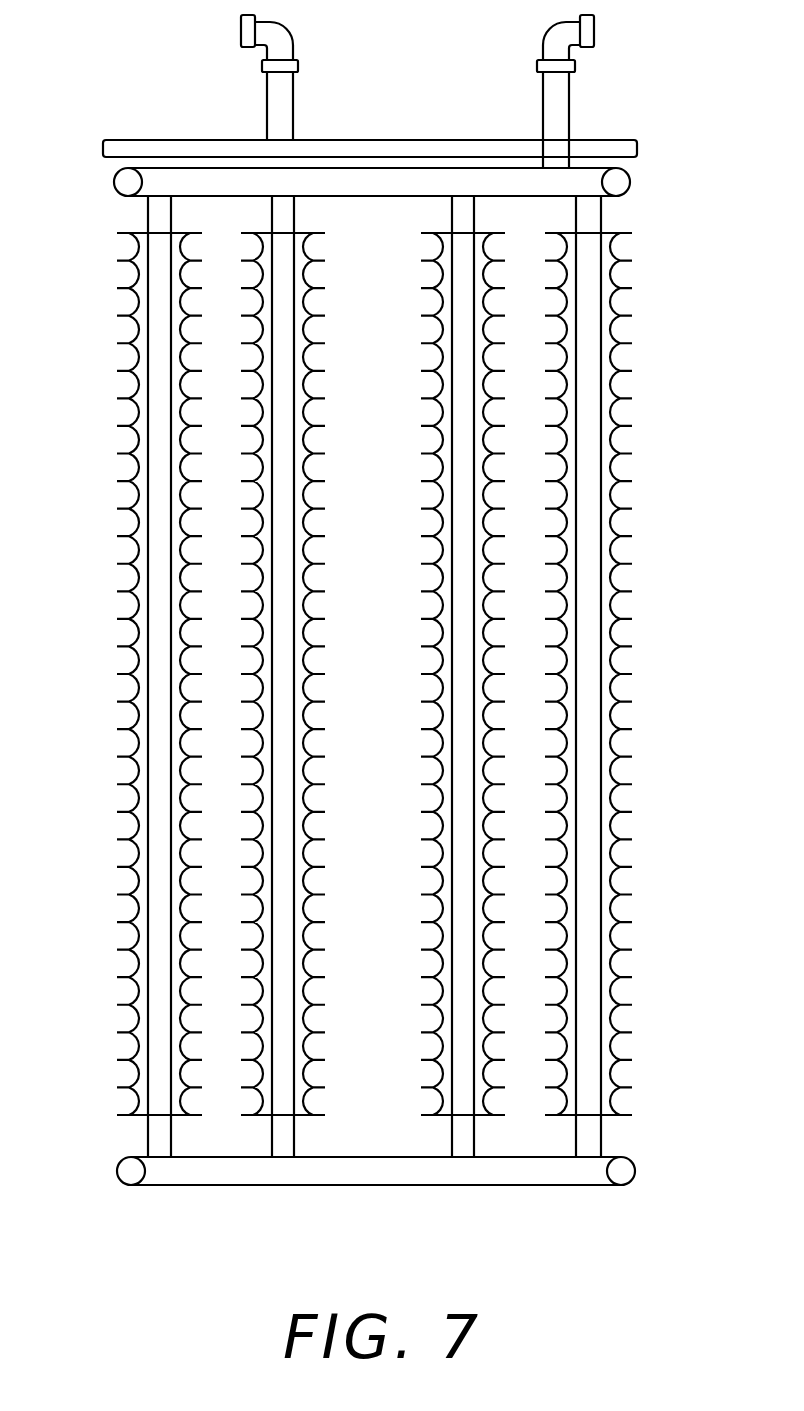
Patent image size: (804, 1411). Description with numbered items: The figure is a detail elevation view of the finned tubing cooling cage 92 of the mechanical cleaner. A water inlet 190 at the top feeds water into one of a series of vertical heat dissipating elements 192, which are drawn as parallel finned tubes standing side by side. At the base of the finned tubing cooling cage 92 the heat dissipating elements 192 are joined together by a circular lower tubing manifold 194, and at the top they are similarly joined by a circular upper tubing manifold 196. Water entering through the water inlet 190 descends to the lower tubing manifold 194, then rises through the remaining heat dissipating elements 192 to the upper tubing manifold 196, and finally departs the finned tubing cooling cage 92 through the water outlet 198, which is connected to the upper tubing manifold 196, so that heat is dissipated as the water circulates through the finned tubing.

The finned tubing cooling cage 92 is at (132, 907).
The water inlet 190 is at (283, 118).
The heat dissipating elements 192 is at (285, 647).
The lower tubing manifold 194 is at (213, 1180).
The upper tubing manifold 196 is at (628, 183).
The water outlet 198 is at (558, 122).